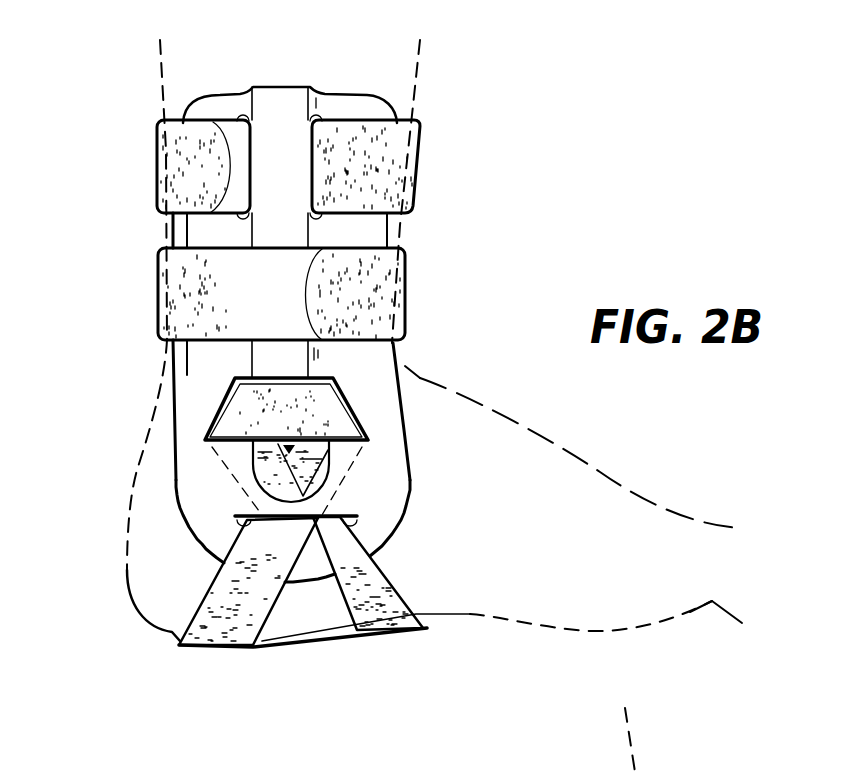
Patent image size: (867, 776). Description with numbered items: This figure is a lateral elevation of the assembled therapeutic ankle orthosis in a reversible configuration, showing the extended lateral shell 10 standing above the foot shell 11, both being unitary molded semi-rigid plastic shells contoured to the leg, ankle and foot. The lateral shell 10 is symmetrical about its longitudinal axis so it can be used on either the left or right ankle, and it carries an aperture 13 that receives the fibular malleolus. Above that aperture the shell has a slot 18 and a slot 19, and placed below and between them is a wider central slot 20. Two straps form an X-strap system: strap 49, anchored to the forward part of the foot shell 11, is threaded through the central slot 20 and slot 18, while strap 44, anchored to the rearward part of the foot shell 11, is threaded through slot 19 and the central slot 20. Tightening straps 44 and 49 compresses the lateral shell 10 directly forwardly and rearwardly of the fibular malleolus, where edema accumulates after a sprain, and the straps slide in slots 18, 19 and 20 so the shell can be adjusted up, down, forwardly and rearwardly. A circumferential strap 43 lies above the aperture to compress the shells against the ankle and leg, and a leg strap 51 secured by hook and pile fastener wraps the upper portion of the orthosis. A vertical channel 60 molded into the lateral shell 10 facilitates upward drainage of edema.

The lateral shell 10 is at (220, 360).
The foot shell 11 is at (330, 651).
The aperture 13 is at (307, 487).
The slot 18 is at (216, 413).
The slot 19 is at (356, 404).
The central slot 20 is at (327, 513).
The circumferential strap 43 is at (172, 281).
The strap 44 is at (219, 648).
The strap 49 is at (398, 632).
The leg strap 51 is at (170, 165).
The vertical channel 60 is at (274, 104).